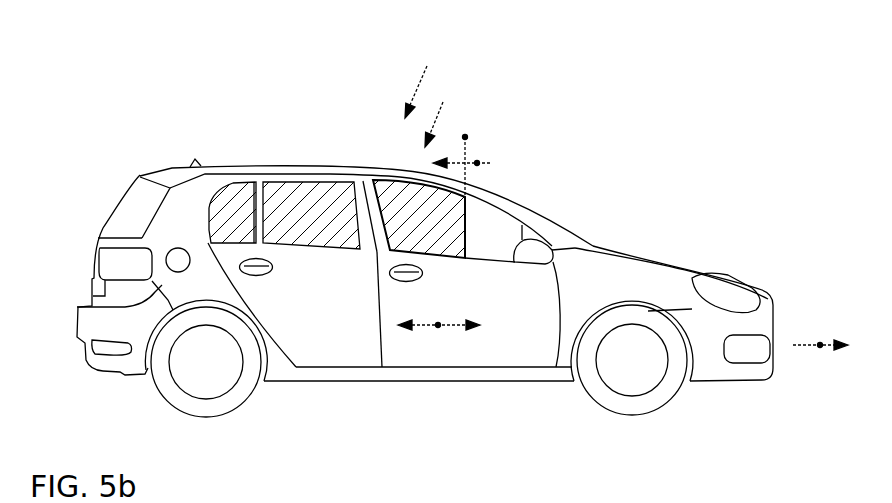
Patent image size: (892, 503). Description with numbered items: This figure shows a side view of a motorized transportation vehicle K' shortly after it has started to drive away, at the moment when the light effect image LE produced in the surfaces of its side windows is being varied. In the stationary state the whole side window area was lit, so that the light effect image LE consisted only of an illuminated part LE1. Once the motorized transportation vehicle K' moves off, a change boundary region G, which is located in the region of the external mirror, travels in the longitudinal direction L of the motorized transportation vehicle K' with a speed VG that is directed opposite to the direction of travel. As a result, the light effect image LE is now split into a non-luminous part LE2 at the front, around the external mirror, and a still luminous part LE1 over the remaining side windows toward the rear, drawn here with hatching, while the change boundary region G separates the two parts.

The illuminated part LE1 is at (393, 198).
The non-luminous part LE2 is at (495, 227).
The motorized transportation vehicle K' is at (424, 79).
The light effect image LE is at (443, 112).
The change boundary region G is at (465, 137).
The speed of the change boundary region VG is at (477, 163).
The longitudinal direction L is at (438, 325).